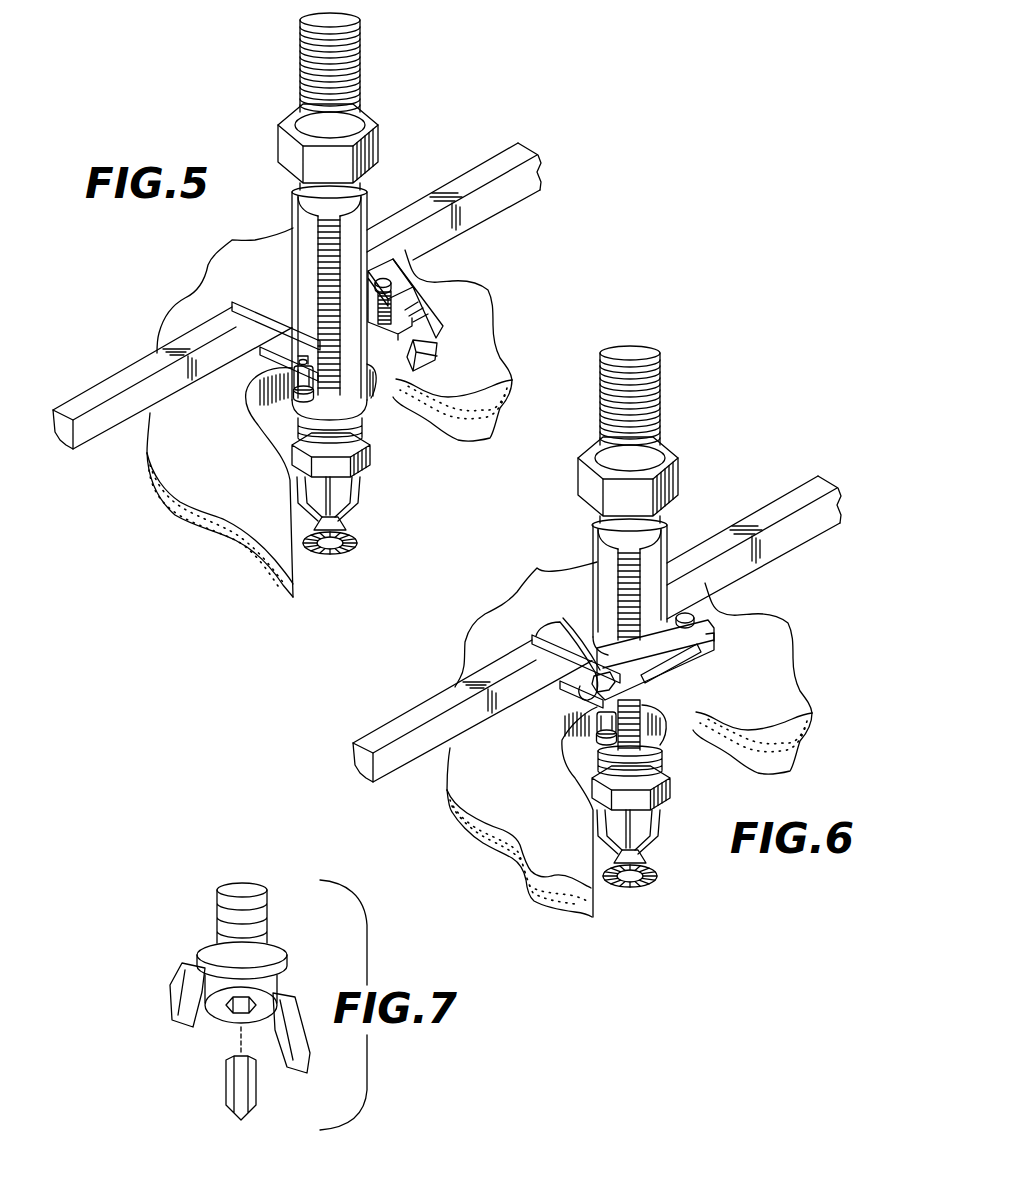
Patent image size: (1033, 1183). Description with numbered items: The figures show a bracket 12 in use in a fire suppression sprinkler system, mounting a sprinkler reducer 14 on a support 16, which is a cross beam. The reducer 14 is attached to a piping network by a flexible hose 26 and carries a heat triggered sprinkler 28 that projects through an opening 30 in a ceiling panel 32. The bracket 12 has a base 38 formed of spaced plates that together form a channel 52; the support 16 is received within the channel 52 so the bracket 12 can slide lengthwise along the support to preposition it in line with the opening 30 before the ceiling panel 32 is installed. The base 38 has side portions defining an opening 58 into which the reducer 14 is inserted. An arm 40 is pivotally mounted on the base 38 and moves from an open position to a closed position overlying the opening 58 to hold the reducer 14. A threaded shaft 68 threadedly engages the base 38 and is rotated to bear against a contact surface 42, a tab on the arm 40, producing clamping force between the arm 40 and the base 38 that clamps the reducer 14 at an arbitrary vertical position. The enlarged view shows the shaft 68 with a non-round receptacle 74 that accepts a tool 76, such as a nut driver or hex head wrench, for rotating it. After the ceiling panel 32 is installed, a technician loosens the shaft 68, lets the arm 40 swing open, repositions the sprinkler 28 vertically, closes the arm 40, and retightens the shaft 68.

In FIG. 5, the bracket 12 is at (273, 290).
In FIG. 6, the bracket 12 is at (580, 616).
In FIG. 5, the sprinkler reducer 14 is at (352, 208).
In FIG. 6, the sprinkler reducer 14 is at (657, 547).
In FIG. 5, the support 16 is at (107, 428).
In FIG. 6, the support 16 is at (410, 757).
In FIG. 5, the flexible hose 26 is at (302, 58).
In FIG. 6, the flexible hose 26 is at (610, 393).
In FIG. 5, the heat triggered sprinkler 28 is at (360, 493).
In FIG. 6, the heat triggered sprinkler 28 is at (653, 847).
In FIG. 5, the opening 30 is at (277, 420).
In FIG. 6, the opening 30 is at (583, 750).
In FIG. 5, the ceiling panel 32 is at (443, 425).
In FIG. 6, the ceiling panel 32 is at (738, 746).
In FIG. 5, the base 38 is at (232, 303).
In FIG. 6, the base 38 is at (587, 604).
In FIG. 5, the arm 40 is at (418, 300).
In FIG. 6, the arm 40 is at (706, 652).
In FIG. 5, the contact surface 42 is at (433, 343).
In FIG. 6, the contact surface 42 is at (563, 628).
In FIG. 5, the channel 52 is at (232, 302).
In FIG. 6, the channel 52 is at (532, 636).
In FIG. 5, the opening 58 is at (407, 403).
In FIG. 5, the threaded shaft 68 is at (292, 380).
In FIG. 6, the threaded shaft 68 is at (590, 725).
In FIG. 7, the threaded shaft 68 is at (220, 922).
In FIG. 7, the non-round receptacle 74 is at (228, 1017).
In FIG. 7, the tool 76 is at (220, 1097).